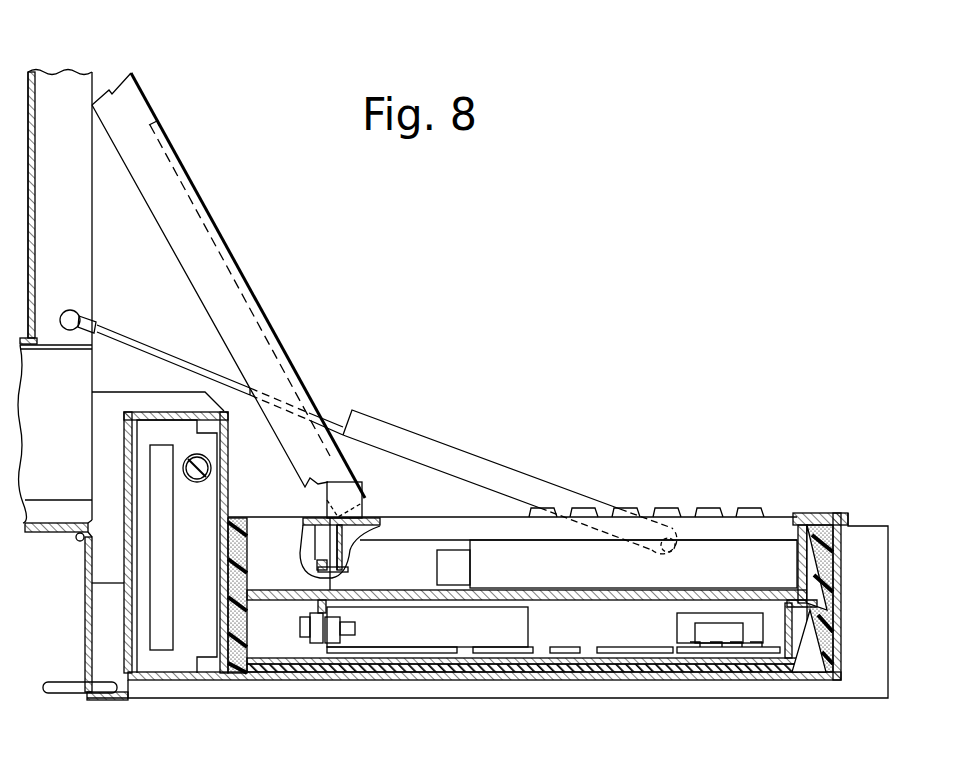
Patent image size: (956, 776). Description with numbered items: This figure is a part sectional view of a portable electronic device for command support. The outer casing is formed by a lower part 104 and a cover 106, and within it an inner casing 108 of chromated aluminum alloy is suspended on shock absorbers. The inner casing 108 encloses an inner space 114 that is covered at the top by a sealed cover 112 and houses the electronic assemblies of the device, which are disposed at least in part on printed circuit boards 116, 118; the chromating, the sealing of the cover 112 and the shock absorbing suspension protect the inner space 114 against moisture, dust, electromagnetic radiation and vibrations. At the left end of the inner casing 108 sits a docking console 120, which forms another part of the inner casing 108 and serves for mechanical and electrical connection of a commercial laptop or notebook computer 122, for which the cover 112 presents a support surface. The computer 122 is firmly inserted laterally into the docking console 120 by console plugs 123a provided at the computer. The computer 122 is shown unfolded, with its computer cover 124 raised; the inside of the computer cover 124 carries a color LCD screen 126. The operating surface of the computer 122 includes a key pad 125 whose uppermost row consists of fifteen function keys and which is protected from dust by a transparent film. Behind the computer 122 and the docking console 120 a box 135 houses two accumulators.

The lower part 104 is at (742, 677).
The cover 106 is at (53, 92).
The inner casing 108 is at (448, 650).
The cover 112 is at (613, 592).
The inner space 114 is at (632, 623).
The printed circuit board 116 is at (382, 650).
The printed circuit board 118 is at (547, 650).
The docking console 120 is at (283, 505).
The computer 122 is at (507, 555).
The console plug 123a is at (371, 518).
The computer cover 124 is at (175, 212).
The key pad 125 is at (715, 513).
The color LCD screen 126 is at (261, 308).
The box 135 is at (160, 412).